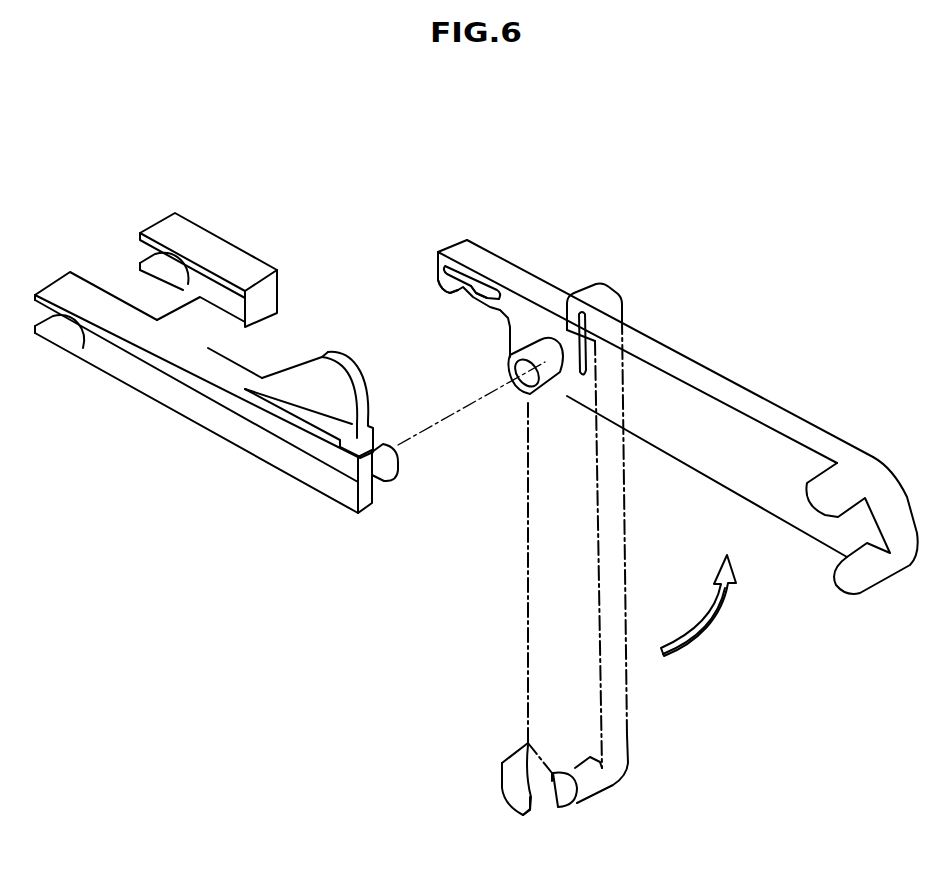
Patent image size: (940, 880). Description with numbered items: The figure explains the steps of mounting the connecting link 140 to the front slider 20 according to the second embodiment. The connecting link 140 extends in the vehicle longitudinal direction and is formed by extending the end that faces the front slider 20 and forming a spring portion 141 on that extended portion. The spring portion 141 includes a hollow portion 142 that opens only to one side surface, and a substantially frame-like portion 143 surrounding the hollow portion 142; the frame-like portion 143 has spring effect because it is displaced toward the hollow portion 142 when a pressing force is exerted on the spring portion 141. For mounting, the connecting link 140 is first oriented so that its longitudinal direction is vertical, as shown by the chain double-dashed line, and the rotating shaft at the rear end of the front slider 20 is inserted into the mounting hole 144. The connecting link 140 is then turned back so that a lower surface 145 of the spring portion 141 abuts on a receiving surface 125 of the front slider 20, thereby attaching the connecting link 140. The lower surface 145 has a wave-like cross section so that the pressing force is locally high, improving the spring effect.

The front slider 20 is at (228, 233).
The receiving surface 125 is at (292, 388).
The connecting link 140 is at (782, 400).
The spring portion 141 is at (493, 240).
The hollow portion 142 is at (470, 293).
The frame-like portion 143 is at (440, 260).
The mounting hole 144 is at (515, 380).
The lower surface 145 is at (458, 288).